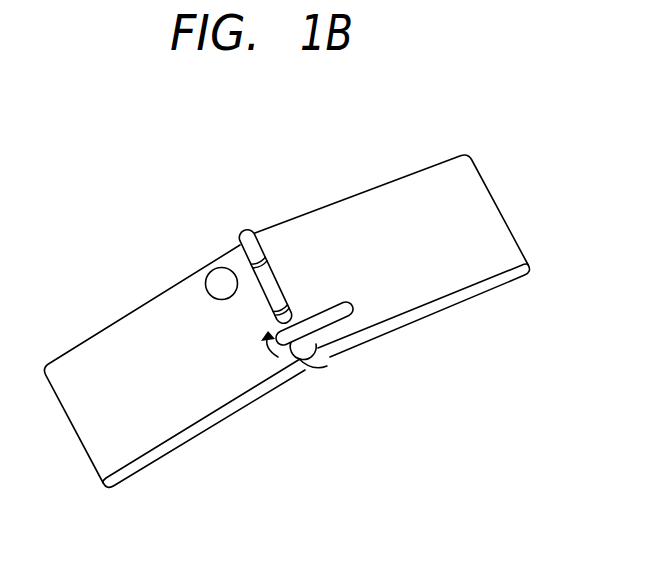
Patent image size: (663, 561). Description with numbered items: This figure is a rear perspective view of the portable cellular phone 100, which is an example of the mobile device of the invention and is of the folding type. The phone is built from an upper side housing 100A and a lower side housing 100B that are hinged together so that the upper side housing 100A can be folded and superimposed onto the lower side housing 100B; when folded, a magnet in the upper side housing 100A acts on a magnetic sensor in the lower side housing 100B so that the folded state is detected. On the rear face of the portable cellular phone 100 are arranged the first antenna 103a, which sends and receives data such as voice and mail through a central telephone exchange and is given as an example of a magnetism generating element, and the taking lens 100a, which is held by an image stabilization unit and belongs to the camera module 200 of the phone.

The portable cellular phone 100 is at (461, 100).
The upper side housing 100A is at (453, 303).
The lower side housing 100B is at (190, 433).
The taking lens 100a is at (218, 282).
The camera module 200 is at (142, 213).
The first antenna 103a is at (338, 313).